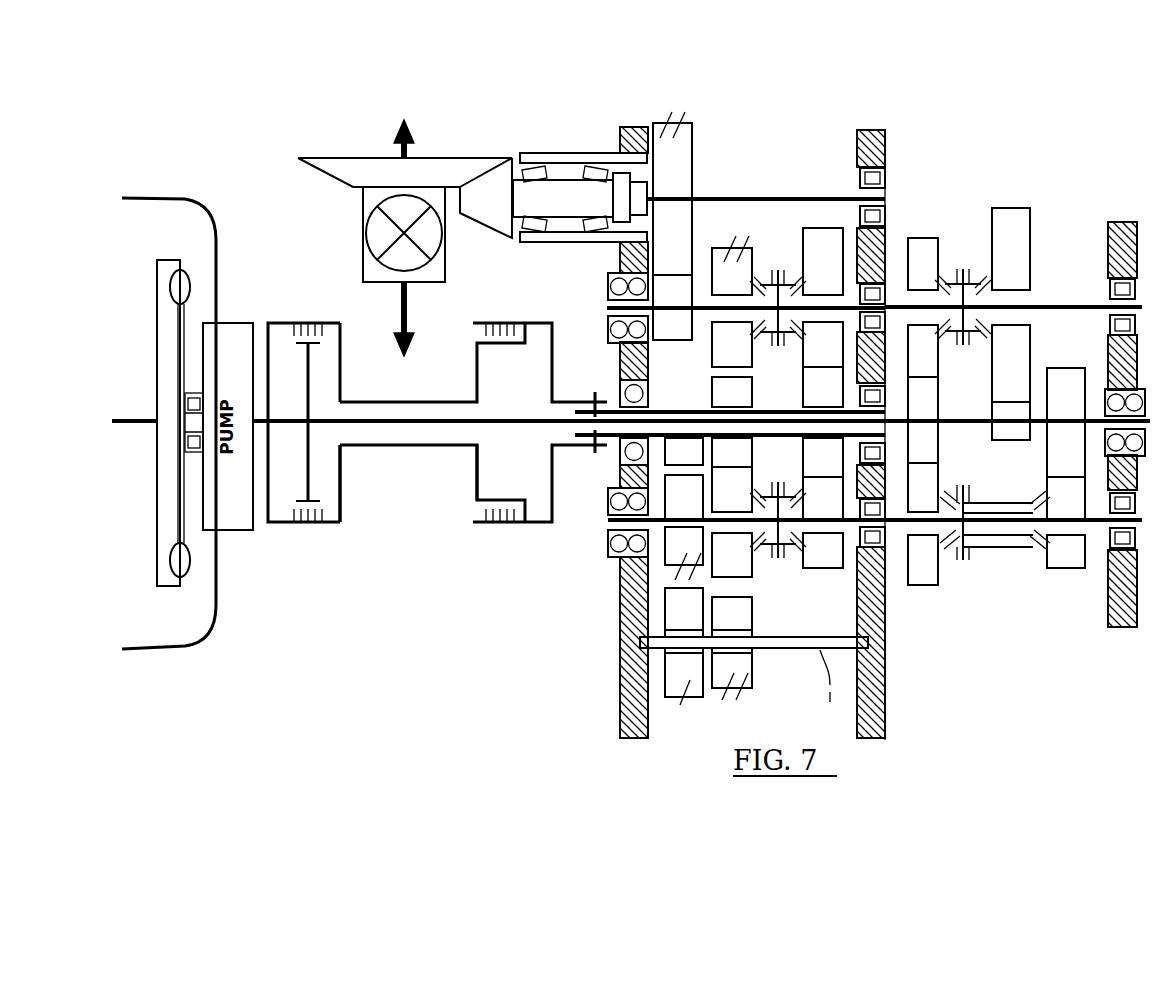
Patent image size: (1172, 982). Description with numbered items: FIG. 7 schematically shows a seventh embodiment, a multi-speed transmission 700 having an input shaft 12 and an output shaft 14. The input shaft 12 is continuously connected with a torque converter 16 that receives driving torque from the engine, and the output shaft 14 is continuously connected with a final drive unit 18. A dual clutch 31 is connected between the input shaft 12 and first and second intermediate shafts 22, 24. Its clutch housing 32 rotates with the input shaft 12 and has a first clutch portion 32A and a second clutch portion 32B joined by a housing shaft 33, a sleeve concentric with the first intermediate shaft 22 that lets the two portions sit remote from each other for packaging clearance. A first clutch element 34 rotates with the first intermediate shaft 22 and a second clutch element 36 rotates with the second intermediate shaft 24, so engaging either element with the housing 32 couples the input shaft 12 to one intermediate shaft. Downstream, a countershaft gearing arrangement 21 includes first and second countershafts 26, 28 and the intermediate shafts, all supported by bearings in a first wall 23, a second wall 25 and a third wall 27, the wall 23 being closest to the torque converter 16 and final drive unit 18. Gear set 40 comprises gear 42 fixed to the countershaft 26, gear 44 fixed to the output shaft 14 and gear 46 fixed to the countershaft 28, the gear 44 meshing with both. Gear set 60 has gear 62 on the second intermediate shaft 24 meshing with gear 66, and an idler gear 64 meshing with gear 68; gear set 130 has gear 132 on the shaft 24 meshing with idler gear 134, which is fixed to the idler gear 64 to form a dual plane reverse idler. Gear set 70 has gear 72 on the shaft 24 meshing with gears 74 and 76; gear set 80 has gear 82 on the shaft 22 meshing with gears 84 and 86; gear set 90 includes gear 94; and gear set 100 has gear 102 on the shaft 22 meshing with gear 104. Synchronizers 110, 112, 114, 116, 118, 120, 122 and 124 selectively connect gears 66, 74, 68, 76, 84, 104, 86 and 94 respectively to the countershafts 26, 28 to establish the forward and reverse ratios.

The input shaft 12 is at (299, 422).
The output shaft 14 is at (812, 195).
The torque converter 16 is at (158, 519).
The final drive unit 18 is at (485, 129).
The countershaft gearing arrangement 21 is at (920, 182).
The first intermediate shaft 22 is at (506, 425).
The first wall 23 is at (620, 596).
The second intermediate shaft 24 is at (612, 405).
The second wall 25 is at (888, 697).
The first countershaft 26 is at (891, 530).
The third wall 27 is at (1121, 627).
The second countershaft 28 is at (1078, 305).
The dual clutch 31 is at (318, 538).
The clutch housing 32 is at (350, 457).
The first clutch portion 32A is at (341, 524).
The second clutch portion 32B is at (475, 481).
The housing shaft 33 is at (434, 400).
The first clutch element 34 is at (306, 350).
The second clutch element 36 is at (525, 323).
The gear set 40 is at (710, 189).
The gear 42 is at (697, 509).
The gear 44 is at (685, 181).
The gear 46 is at (685, 341).
The gear set 60 is at (733, 420).
The gear 62 is at (744, 406).
The idler gear 64 is at (744, 626).
The gear 66 is at (744, 508).
The gear 68 is at (744, 294).
The gear set 70 is at (823, 430).
The gear 72 is at (835, 406).
The gear 74 is at (823, 522).
The gear 76 is at (835, 294).
The gear set 80 is at (930, 388).
The gear 82 is at (936, 420).
The gear 84 is at (936, 579).
The gear 86 is at (936, 287).
The gear set 90 is at (1018, 276).
The gear 94 is at (1023, 270).
The gear set 100 is at (1063, 574).
The gear 102 is at (1082, 407).
The gear 104 is at (1082, 512).
The synchronizer 110 is at (762, 549).
The synchronizer 112 is at (790, 496).
The synchronizer 114 is at (764, 335).
The synchronizer 116 is at (795, 280).
The synchronizer 118 is at (948, 549).
The synchronizer 120 is at (1013, 497).
The synchronizer 122 is at (948, 345).
The synchronizer 124 is at (978, 275).
The gear set 130 is at (692, 700).
The gear 132 is at (700, 464).
The idler gear 134 is at (700, 626).
The multi-speed transmission 700 is at (270, 168).